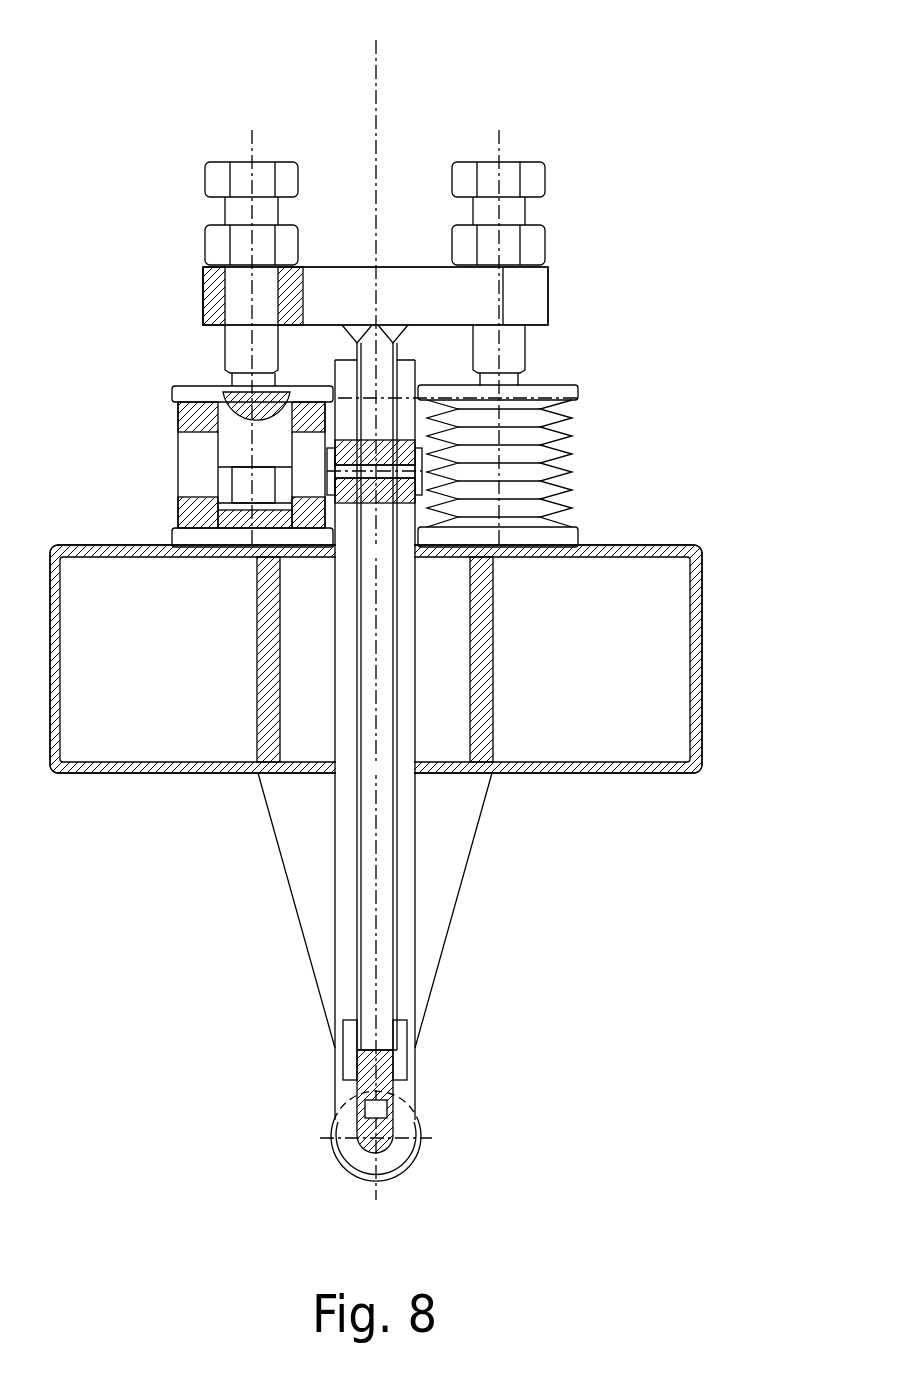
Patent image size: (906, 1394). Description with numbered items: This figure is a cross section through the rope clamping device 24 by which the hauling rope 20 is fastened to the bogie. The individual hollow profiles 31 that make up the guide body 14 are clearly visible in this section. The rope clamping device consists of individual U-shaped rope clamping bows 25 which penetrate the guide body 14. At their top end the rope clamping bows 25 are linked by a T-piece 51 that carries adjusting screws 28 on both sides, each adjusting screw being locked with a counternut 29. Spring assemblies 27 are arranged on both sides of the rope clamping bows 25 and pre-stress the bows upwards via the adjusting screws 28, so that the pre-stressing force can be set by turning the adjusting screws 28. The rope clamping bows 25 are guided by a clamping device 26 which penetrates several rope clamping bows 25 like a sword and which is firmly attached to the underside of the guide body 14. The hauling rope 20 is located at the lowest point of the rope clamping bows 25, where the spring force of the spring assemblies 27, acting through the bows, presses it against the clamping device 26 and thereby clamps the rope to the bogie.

The guide body 14 is at (635, 826).
The hauling rope 20 is at (358, 1127).
The rope clamping device 24 is at (620, 136).
The rope clamping bows 25 is at (413, 943).
The clamping device 26 is at (365, 955).
The spring assemblies 27 is at (535, 453).
The adjusting screws 28 is at (513, 175).
The counternuts 29 is at (537, 243).
The hollow profiles 31 is at (696, 653).
The T-piece 51 is at (427, 280).